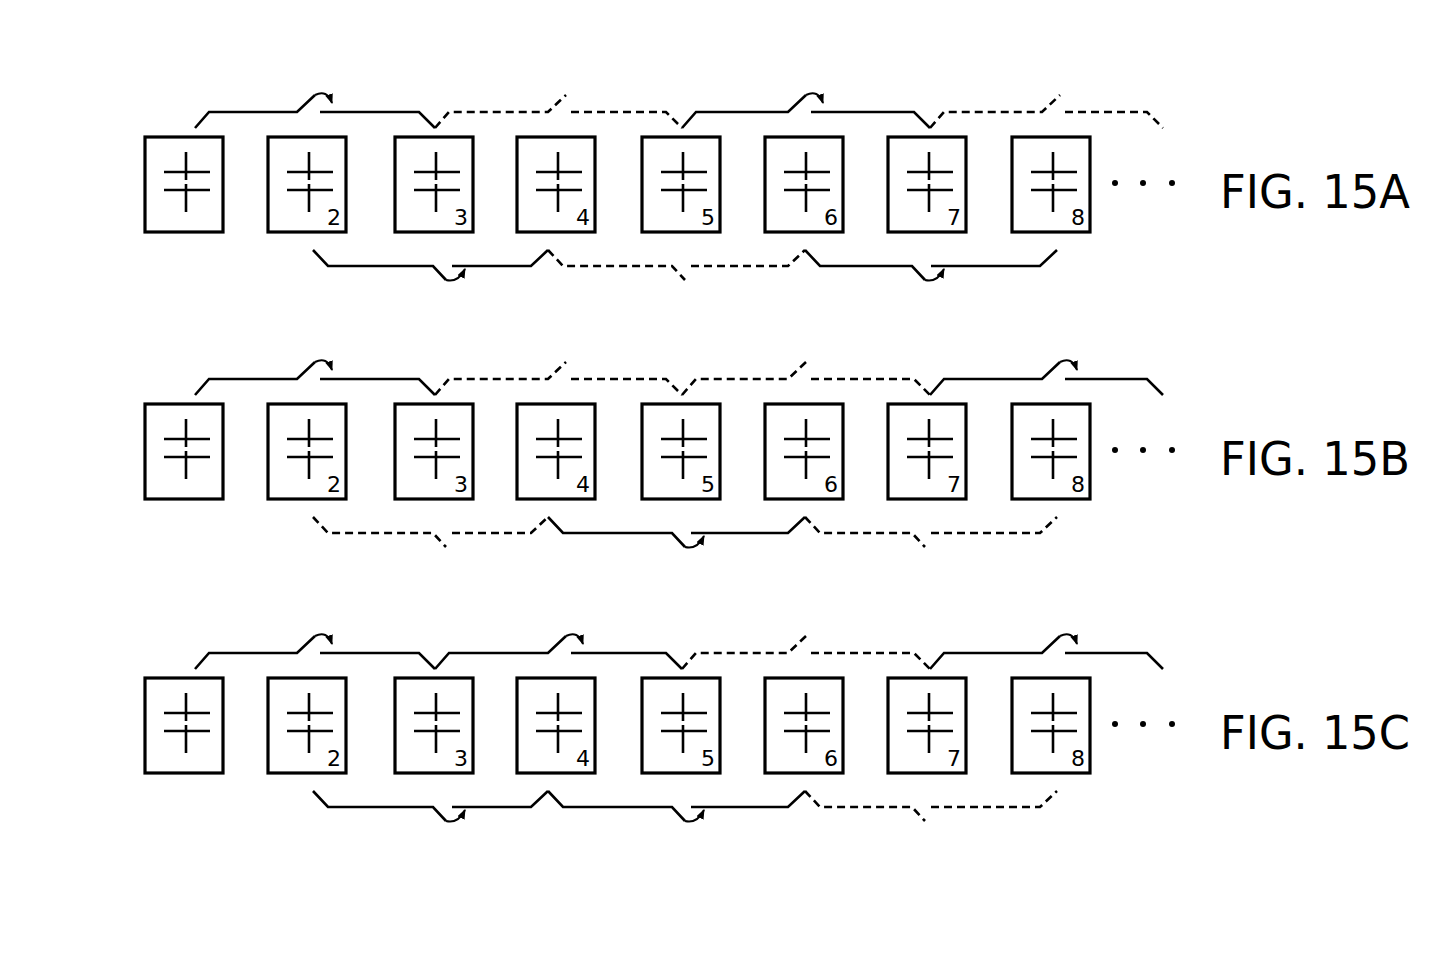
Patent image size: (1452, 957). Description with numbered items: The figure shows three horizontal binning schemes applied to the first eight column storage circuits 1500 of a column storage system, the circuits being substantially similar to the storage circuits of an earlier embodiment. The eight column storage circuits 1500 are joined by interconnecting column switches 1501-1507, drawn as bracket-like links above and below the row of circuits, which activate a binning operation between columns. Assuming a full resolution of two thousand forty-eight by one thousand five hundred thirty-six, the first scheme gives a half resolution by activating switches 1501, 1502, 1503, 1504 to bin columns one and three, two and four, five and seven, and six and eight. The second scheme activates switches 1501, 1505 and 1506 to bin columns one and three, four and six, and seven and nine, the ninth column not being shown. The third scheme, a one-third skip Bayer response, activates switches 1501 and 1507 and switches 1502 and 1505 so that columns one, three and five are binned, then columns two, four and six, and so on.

In FIG. 15A, the column storage circuit 1500 is at (183, 232).
In FIG. 15B, the column storage circuit 1500 is at (184, 476).
In FIG. 15C, the column storage circuit 1500 is at (184, 750).
In FIG. 15A, the column switch 1501 is at (293, 102).
In FIG. 15B, the column switch 1501 is at (315, 352).
In FIG. 15C, the column switch 1501 is at (315, 626).
In FIG. 15A, the column switch 1502 is at (425, 274).
In FIG. 15C, the column switch 1502 is at (430, 835).
In FIG. 15A, the column switch 1503 is at (784, 102).
In FIG. 15A, the column switch 1504 is at (904, 274).
In FIG. 15B, the column switch 1505 is at (676, 561).
In FIG. 15C, the column switch 1505 is at (676, 835).
In FIG. 15B, the column switch 1506 is at (1046, 352).
In FIG. 15C, the column switch 1506 is at (1046, 626).
In FIG. 15C, the column switch 1507 is at (558, 626).